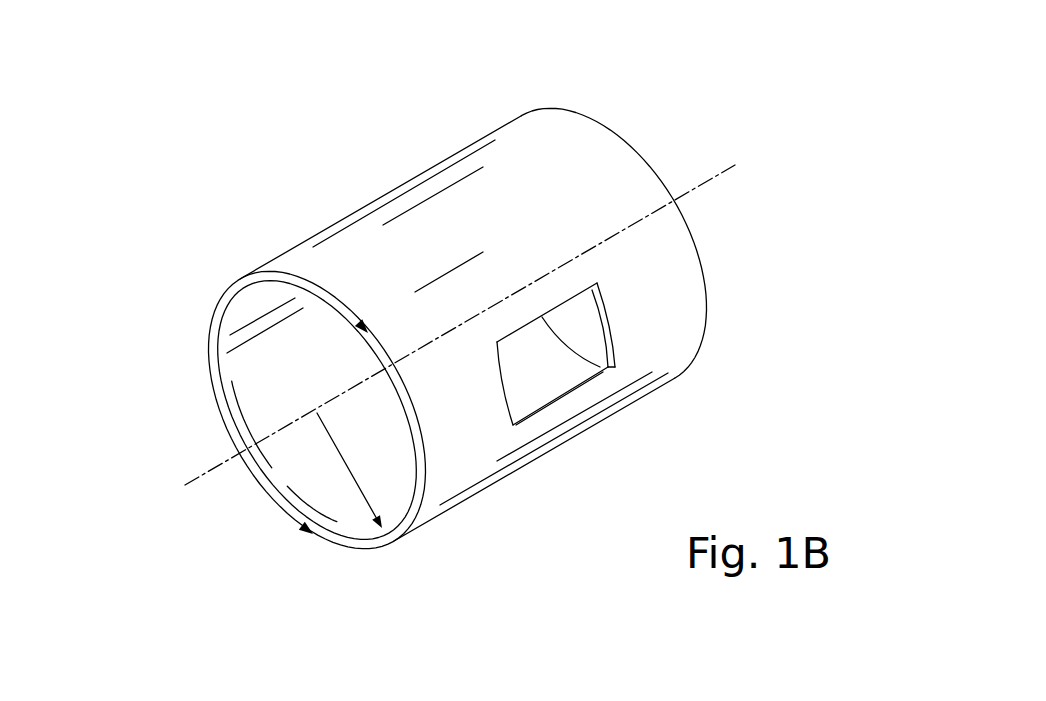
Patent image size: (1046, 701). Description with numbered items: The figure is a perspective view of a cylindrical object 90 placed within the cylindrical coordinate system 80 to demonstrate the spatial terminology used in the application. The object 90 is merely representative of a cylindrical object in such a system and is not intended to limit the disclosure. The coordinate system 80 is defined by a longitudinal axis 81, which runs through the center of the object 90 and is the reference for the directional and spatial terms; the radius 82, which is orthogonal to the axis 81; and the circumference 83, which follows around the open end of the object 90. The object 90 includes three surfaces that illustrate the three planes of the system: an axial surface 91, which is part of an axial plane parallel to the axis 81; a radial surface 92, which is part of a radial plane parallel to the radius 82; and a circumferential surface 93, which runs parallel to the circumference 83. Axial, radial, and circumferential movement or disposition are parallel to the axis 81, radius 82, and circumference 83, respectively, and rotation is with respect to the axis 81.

The cylindrical coordinate system 80 is at (646, 117).
The longitudinal axis 81 is at (187, 482).
The radius 82 is at (360, 476).
The circumference 83 is at (217, 302).
The cylindrical object 90 is at (496, 103).
The axial surface 91 is at (580, 378).
The radial surface 92 is at (333, 541).
The circumferential surface 93 is at (430, 218).